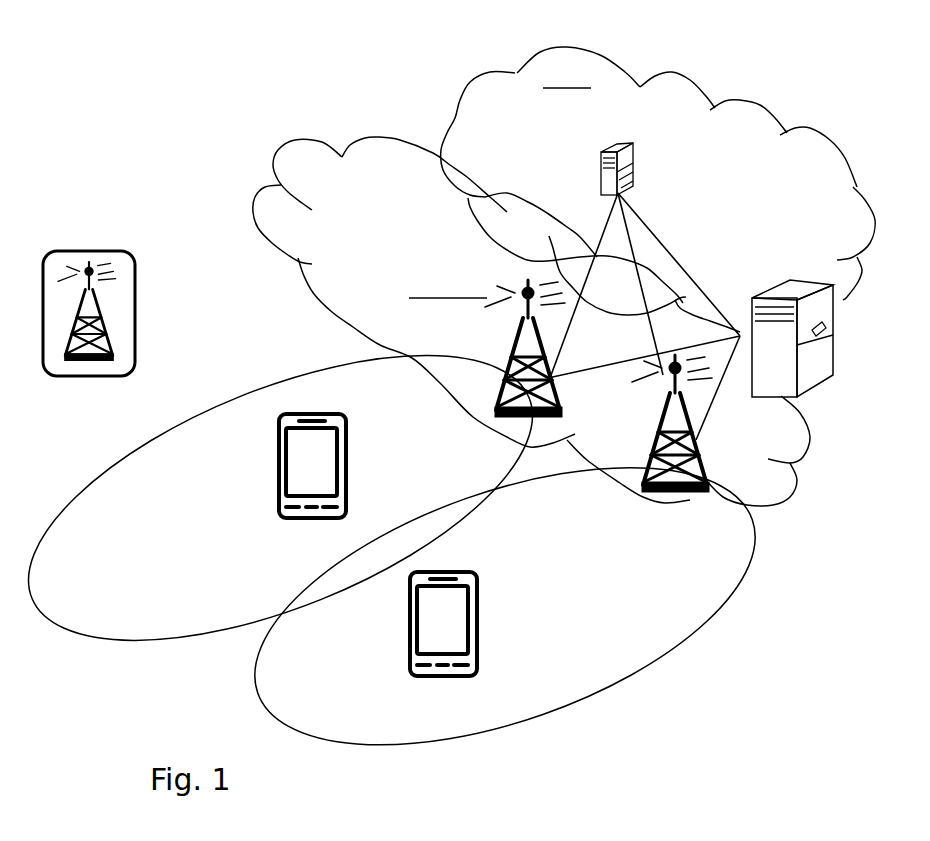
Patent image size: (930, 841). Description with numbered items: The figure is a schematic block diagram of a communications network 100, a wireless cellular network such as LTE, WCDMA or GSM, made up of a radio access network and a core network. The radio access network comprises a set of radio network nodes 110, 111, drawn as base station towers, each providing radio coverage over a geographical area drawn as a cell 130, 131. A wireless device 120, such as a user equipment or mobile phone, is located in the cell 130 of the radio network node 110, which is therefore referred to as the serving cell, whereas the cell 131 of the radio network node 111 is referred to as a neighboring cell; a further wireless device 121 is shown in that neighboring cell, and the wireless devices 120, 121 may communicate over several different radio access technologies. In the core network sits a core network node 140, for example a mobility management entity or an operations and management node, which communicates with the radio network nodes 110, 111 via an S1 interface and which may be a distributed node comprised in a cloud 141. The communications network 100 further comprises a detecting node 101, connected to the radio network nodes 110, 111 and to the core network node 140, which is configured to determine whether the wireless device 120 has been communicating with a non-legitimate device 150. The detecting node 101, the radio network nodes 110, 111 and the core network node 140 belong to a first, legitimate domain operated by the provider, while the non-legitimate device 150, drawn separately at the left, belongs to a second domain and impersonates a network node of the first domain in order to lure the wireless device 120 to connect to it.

The communications network 100 is at (322, 69).
The detecting node 101 is at (839, 338).
The radio network node 110 is at (518, 361).
The radio network node 111 is at (695, 443).
The wireless device 120 is at (350, 428).
The wireless device 121 is at (482, 594).
The cell 130 is at (227, 515).
The cell 131 is at (632, 622).
The core network node 140 is at (636, 173).
The cloud 141 is at (778, 290).
The non-legitimate device 150 is at (137, 294).